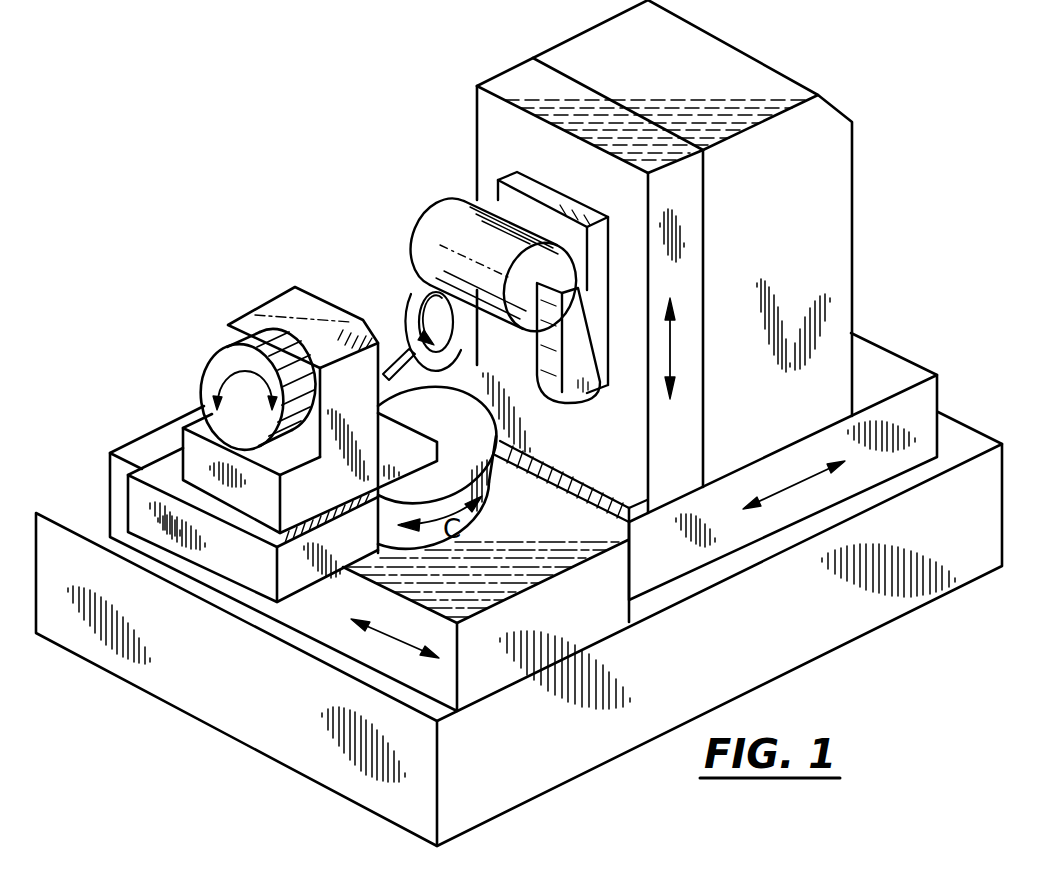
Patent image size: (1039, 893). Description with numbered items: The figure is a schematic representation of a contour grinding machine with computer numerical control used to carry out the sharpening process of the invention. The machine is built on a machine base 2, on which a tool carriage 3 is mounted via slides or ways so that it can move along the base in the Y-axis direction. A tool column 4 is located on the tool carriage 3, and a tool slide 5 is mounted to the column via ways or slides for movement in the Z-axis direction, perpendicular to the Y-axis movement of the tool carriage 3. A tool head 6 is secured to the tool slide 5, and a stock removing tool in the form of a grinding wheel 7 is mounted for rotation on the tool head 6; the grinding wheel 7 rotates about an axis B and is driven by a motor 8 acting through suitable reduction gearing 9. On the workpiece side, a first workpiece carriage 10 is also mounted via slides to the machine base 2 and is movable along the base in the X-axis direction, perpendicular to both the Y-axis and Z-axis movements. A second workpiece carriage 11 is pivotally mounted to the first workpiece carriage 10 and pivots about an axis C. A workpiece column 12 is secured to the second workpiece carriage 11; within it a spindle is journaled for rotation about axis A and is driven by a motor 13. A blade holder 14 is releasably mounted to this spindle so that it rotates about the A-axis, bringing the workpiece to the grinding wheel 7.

The machine base 2 is at (672, 661).
The tool carriage 3 is at (923, 404).
The tool column 4 is at (791, 205).
The tool slide 5 is at (510, 80).
The tool head 6 is at (543, 197).
The grinding wheel 7 is at (413, 284).
The motor 8 is at (461, 272).
The reduction gearing 9 is at (584, 380).
The first workpiece carriage 10 is at (323, 632).
The second workpiece carriage 11 is at (230, 563).
The workpiece column 12 is at (280, 307).
The motor 13 is at (212, 383).
The blade holder 14 is at (388, 352).